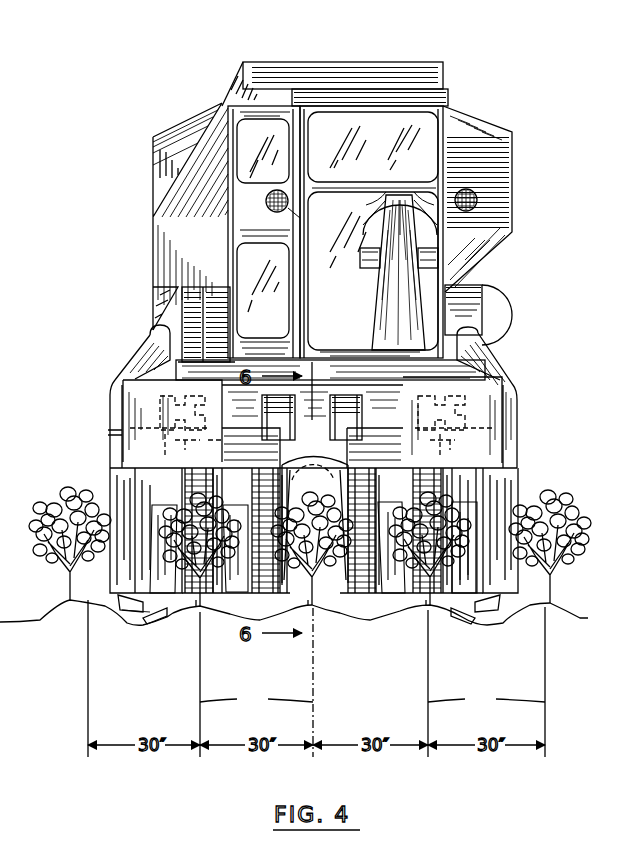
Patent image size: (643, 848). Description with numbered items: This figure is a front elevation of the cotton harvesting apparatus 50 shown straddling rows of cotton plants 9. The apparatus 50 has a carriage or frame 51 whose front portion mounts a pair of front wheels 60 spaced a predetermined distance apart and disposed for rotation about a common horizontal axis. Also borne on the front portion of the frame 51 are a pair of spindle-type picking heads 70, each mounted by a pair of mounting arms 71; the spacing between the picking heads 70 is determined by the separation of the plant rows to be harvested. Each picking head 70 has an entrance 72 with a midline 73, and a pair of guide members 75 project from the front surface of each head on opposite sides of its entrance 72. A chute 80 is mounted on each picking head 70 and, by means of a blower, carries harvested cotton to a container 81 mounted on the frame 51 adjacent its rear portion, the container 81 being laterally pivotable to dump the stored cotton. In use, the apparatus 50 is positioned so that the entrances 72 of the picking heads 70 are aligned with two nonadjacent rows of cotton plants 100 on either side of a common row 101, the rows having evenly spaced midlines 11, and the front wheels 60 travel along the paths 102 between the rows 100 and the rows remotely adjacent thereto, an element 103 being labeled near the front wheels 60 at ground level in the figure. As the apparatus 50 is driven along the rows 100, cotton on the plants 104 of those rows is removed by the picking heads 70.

The apparatus 50 is at (125, 127).
The container 81 is at (400, 62).
The chute 80 is at (112, 356).
The picking head 70 is at (118, 480).
The mounting arms 71 is at (347, 396).
The frame 51 is at (312, 425).
The entrance 72 is at (190, 481).
The midline 73 is at (192, 493).
The guide members 75 is at (468, 556).
The cotton plants 9 is at (580, 542).
The front wheels 60 is at (135, 615).
The cutter edge 103 is at (126, 624).
The rows of cotton plants 100 is at (212, 622).
The paths 102 is at (250, 618).
The common row 101 is at (305, 613).
The plants 104 is at (405, 618).
The midlines 11 is at (372, 699).